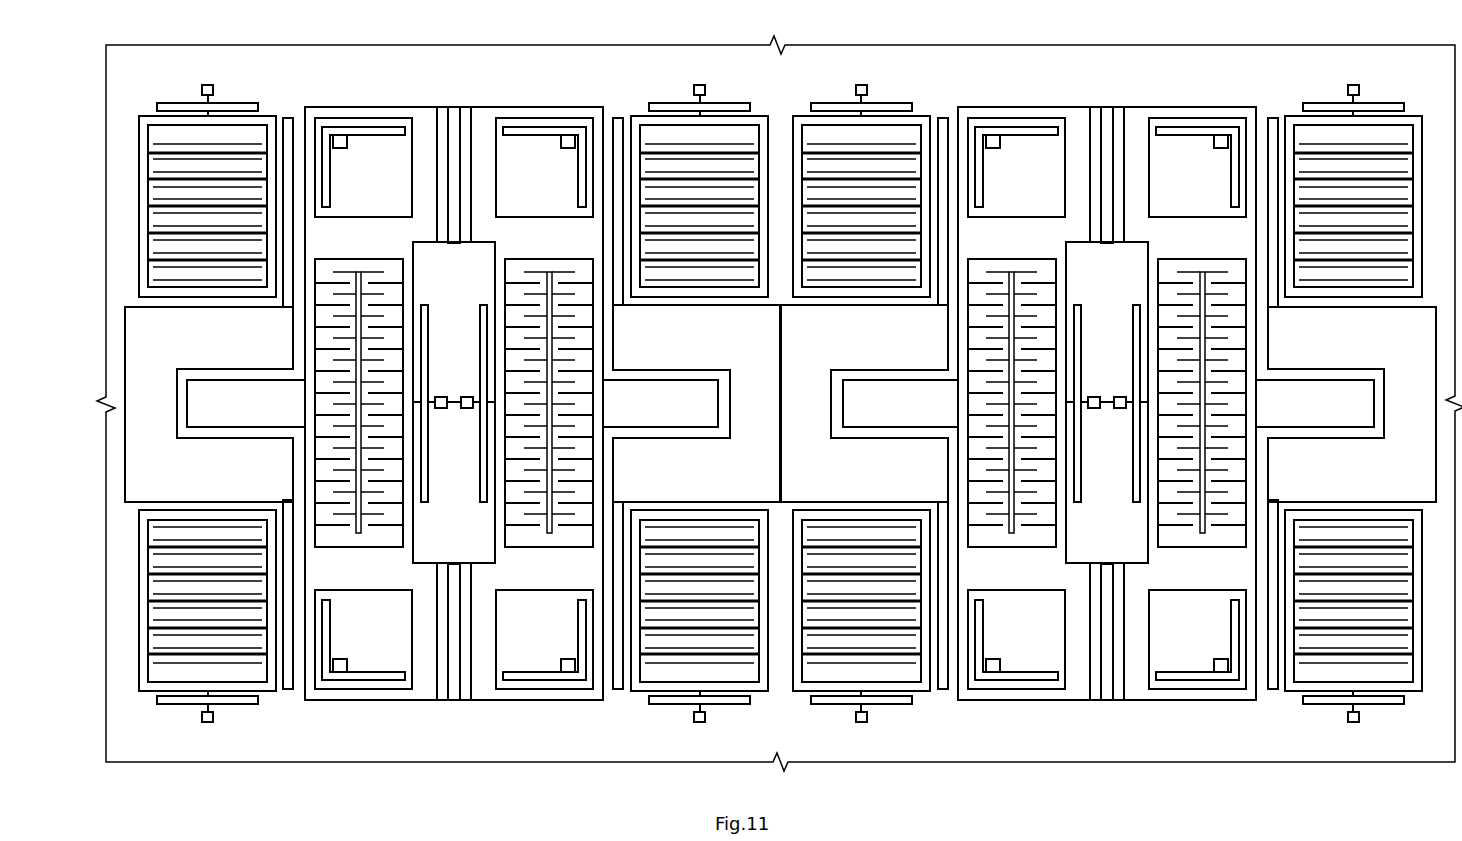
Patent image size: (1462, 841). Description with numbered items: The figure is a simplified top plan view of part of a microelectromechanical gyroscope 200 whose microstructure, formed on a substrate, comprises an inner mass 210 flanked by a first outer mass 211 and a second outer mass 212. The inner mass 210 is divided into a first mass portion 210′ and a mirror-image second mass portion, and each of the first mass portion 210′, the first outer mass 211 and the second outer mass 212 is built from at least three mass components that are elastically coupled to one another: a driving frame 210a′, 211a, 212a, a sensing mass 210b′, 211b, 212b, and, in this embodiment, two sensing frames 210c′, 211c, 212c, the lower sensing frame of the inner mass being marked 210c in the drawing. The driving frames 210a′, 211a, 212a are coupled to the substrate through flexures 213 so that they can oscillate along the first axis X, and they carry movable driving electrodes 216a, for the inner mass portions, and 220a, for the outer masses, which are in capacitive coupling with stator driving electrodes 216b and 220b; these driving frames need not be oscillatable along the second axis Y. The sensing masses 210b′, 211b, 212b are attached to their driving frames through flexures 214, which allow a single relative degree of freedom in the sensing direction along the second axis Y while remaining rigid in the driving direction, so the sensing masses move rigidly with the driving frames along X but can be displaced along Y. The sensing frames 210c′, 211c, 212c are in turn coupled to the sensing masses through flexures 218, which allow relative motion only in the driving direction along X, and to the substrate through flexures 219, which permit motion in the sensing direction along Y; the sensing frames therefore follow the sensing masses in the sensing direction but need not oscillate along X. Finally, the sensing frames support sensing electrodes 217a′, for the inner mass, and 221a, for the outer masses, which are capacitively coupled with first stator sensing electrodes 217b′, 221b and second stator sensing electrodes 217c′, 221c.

The microelectromechanical gyroscope 200 is at (212, 792).
The inner mass 210 is at (747, 52).
The first mass portion 210′ is at (608, 88).
The driving frame 210a′ is at (454, 409).
The sensing mass 210b′ is at (780, 403).
The sensing frame 210c is at (632, 694).
The sensing frame 210c′ is at (694, 385).
The first outer mass 211 is at (779, 406).
The driving frame 211a is at (399, 118).
The sensing mass 211b is at (209, 404).
The sensing frame 211c is at (779, 384).
The second outer mass 212 is at (1254, 432).
The driving frame 212a is at (1148, 694).
The sensing mass 212b is at (1352, 404).
The sensing frame 212c is at (1287, 118).
The flexures 213 is at (480, 372).
The flexures 214 is at (268, 425).
The movable driving electrodes 216a is at (580, 507).
The stator driving electrodes 216b is at (568, 272).
The sensing electrodes 217a′ is at (720, 177).
The first stator sensing electrodes 217b′ is at (657, 170).
The second stator sensing electrodes 217c′ is at (688, 278).
The flexures 218 is at (288, 118).
The flexures 219 is at (232, 107).
The movable driving electrodes 220a is at (397, 507).
The stator driving electrodes 220b is at (345, 292).
The sensing electrodes 221a is at (248, 232).
The first stator sensing electrodes 221b is at (187, 240).
The second stator sensing electrodes 221c is at (182, 168).